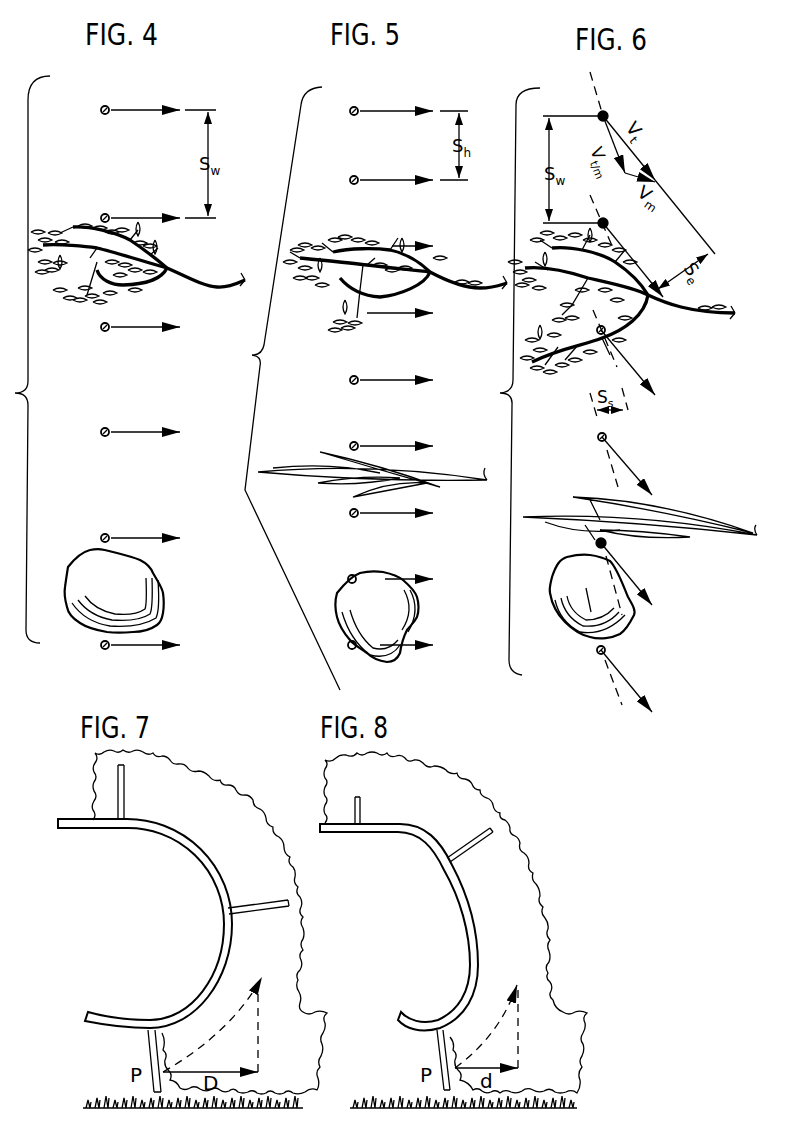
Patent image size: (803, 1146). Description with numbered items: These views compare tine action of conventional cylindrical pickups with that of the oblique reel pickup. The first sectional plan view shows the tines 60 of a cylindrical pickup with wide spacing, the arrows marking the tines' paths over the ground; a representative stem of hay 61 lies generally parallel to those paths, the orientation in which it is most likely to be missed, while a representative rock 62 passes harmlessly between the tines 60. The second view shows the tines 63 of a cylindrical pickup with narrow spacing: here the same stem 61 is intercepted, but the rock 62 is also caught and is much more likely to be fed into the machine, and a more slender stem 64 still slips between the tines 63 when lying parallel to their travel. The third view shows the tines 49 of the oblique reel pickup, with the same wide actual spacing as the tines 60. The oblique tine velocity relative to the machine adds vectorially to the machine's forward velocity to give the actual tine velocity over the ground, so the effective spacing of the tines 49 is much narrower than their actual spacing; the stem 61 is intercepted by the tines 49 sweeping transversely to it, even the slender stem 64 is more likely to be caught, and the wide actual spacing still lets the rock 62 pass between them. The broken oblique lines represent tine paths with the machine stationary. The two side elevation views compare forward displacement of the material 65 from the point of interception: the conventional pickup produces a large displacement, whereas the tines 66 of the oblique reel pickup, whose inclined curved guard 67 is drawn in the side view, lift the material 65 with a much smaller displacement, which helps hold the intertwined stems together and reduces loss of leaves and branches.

In FIG. 6, the tines 49 is at (598, 435).
In FIG. 4, the tines 60 is at (99, 430).
In FIG. 4, the stem of hay 61 is at (68, 220).
In FIG. 5, the stem of hay 61 is at (328, 245).
In FIG. 6, the stem of hay 61 is at (550, 252).
In FIG. 4, the rock 62 is at (75, 555).
In FIG. 5, the rock 62 is at (340, 593).
In FIG. 6, the rock 62 is at (560, 570).
In FIG. 5, the tines 63 is at (350, 378).
In FIG. 5, the slender stem 64 is at (310, 465).
In FIG. 6, the slender stem 64 is at (568, 505).
In FIG. 7, the material 65 is at (303, 1012).
In FIG. 8, the material 65 is at (563, 1012).
In FIG. 8, the tines 66 is at (440, 1057).
In FIG. 8, the curved deflector plate 67 is at (478, 963).